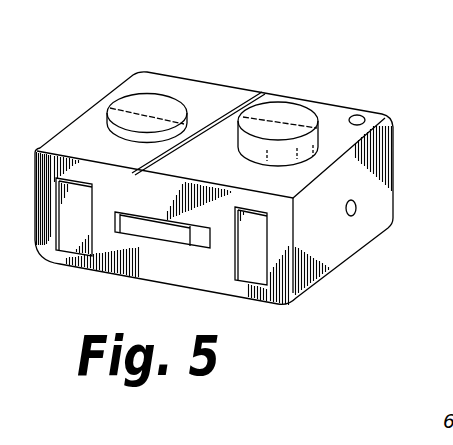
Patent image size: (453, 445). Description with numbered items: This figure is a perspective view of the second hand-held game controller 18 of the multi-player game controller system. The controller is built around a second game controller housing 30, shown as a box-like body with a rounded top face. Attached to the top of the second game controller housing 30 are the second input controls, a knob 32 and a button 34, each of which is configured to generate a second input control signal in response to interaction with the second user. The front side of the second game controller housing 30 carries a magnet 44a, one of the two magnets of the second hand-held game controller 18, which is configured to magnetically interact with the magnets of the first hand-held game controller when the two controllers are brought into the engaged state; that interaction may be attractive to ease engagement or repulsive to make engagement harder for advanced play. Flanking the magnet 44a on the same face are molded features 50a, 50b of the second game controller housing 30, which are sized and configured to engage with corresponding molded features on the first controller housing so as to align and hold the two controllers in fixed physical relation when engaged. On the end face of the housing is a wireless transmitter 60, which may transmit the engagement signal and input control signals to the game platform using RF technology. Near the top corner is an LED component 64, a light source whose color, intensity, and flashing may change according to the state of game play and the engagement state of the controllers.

The second hand-held game controller 18 is at (210, 73).
The second game controller housing 30 is at (197, 282).
The knob 32 is at (290, 112).
The button 34 is at (138, 106).
The magnet 44a is at (170, 232).
The molded feature 50a is at (70, 242).
The molded feature 50b is at (257, 265).
The wireless transmitter 60 is at (355, 213).
The LED component 64 is at (363, 116).